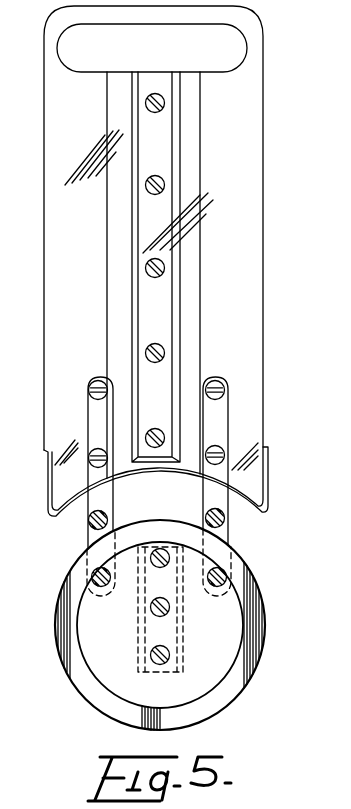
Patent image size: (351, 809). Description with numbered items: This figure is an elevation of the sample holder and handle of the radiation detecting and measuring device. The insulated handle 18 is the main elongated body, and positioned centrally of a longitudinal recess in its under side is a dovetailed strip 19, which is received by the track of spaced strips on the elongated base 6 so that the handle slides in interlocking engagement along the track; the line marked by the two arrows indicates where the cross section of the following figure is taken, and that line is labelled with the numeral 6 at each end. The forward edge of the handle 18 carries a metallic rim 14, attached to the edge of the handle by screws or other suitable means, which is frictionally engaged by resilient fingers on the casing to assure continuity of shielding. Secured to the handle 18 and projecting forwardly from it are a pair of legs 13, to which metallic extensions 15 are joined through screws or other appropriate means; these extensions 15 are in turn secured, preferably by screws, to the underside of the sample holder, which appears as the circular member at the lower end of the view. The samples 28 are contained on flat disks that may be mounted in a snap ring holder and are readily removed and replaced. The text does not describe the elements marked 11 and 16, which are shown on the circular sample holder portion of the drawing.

The elongated base 6 is at (293, 162).
The cylindrical housing 11 is at (259, 622).
The legs 13 is at (216, 379).
The metallic rim 14 is at (270, 470).
The metallic extensions 15 is at (265, 553).
The central bracket 16 is at (138, 623).
The insulated handle 18 is at (248, 217).
The dovetailed strip 19 is at (173, 275).
The samples 28 is at (220, 636).